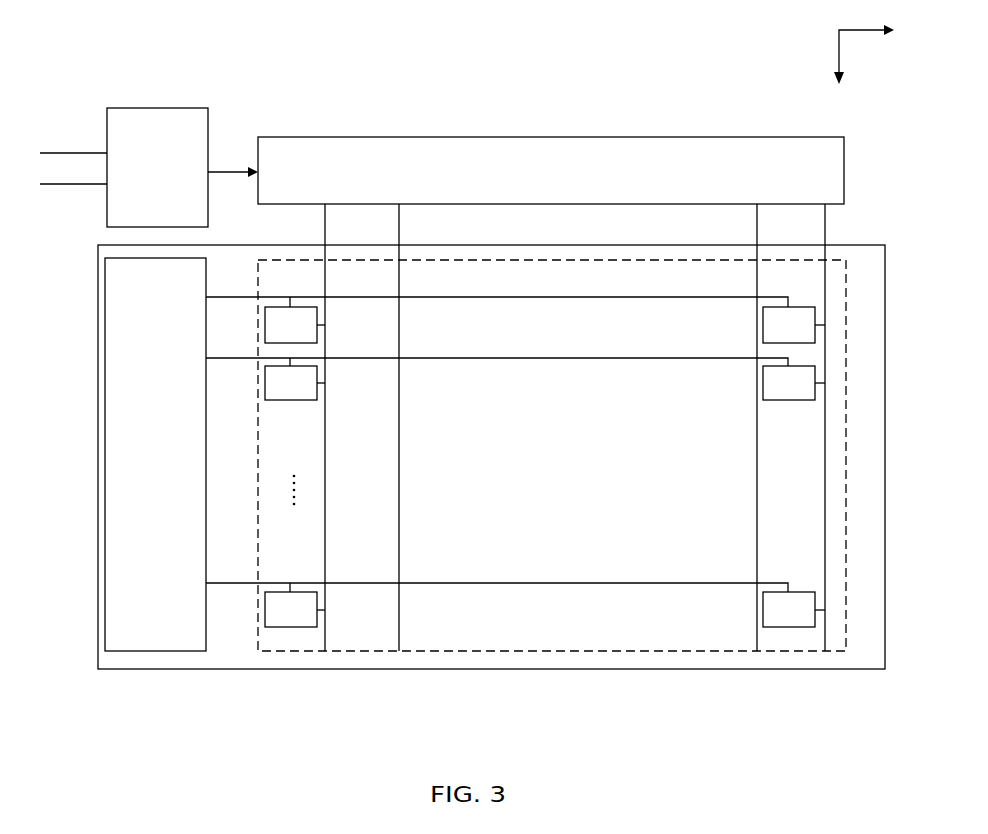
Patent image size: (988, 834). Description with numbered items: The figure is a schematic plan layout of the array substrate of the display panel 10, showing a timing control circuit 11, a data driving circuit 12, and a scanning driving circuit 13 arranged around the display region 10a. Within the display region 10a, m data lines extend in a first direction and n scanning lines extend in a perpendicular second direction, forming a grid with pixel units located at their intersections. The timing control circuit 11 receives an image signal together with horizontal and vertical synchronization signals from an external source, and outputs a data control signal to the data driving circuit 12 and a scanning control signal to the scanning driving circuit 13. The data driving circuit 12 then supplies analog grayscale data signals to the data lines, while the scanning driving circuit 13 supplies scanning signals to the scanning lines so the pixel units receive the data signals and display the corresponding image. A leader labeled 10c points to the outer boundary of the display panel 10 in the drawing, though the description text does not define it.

The display panel 10 is at (506, 23).
The display region 10a is at (643, 651).
The display panel 10c is at (392, 669).
The timing control circuit 11 is at (145, 108).
The data driving circuit 12 is at (712, 137).
The scanning driving circuit 13 is at (151, 651).